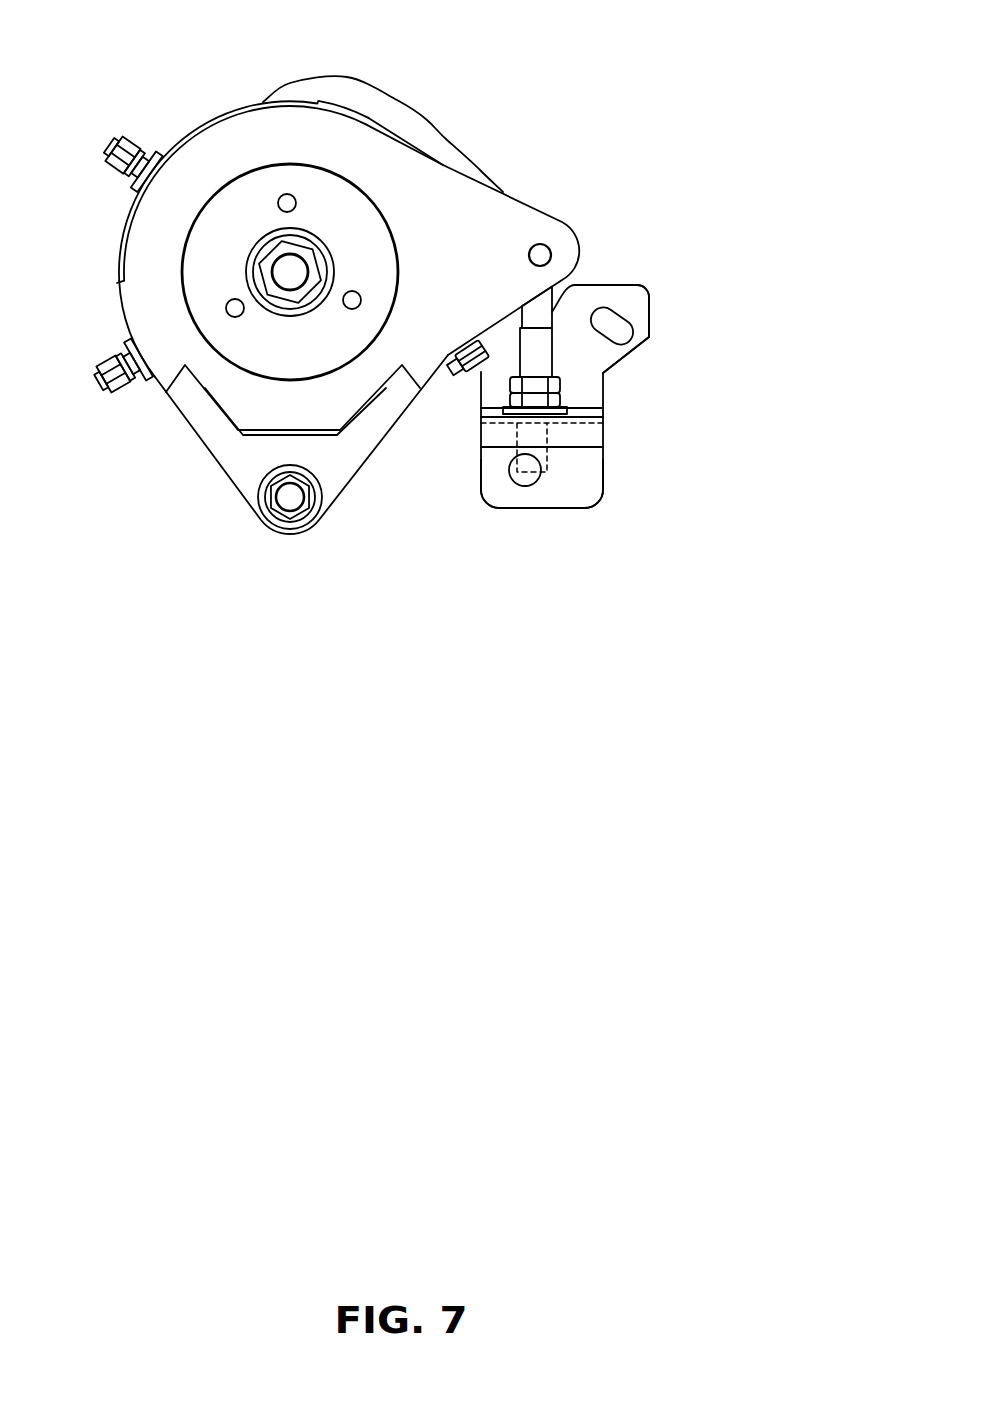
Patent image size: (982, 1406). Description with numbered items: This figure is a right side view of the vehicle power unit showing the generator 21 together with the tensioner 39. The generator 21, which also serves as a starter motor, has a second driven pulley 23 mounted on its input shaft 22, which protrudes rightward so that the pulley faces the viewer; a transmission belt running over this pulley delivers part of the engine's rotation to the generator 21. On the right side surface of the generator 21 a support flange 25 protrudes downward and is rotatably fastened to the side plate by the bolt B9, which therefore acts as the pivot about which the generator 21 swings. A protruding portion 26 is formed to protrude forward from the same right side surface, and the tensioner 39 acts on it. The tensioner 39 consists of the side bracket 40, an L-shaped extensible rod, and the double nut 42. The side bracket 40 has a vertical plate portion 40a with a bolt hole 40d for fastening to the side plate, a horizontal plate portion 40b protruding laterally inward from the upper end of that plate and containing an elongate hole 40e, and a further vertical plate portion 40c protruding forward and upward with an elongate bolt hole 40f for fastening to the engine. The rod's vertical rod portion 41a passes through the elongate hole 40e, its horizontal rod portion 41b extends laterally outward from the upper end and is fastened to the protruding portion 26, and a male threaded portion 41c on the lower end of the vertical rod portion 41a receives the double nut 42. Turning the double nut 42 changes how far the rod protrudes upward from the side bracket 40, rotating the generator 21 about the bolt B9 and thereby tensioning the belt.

The generator 21 is at (245, 103).
The input shaft 22 is at (280, 262).
The second driven pulley 23 is at (193, 240).
The support flange 25 is at (228, 472).
The protruding portion 26 is at (485, 203).
The tensioner 39 is at (777, 187).
The side bracket 40 is at (598, 320).
The vertical plate portion 40a is at (590, 485).
The horizontal plate portion 40b is at (608, 407).
The vertical plate portion 40c is at (645, 295).
The bolt hole 40d is at (523, 486).
The elongate hole 40e is at (517, 420).
The elongate bolt hole 40f is at (610, 318).
The vertical rod portion 41a is at (580, 290).
The horizontal rod portion 41b is at (542, 243).
The male threaded portion 41c is at (545, 355).
The double nut 42 is at (510, 390).
The bolt B9 is at (290, 520).